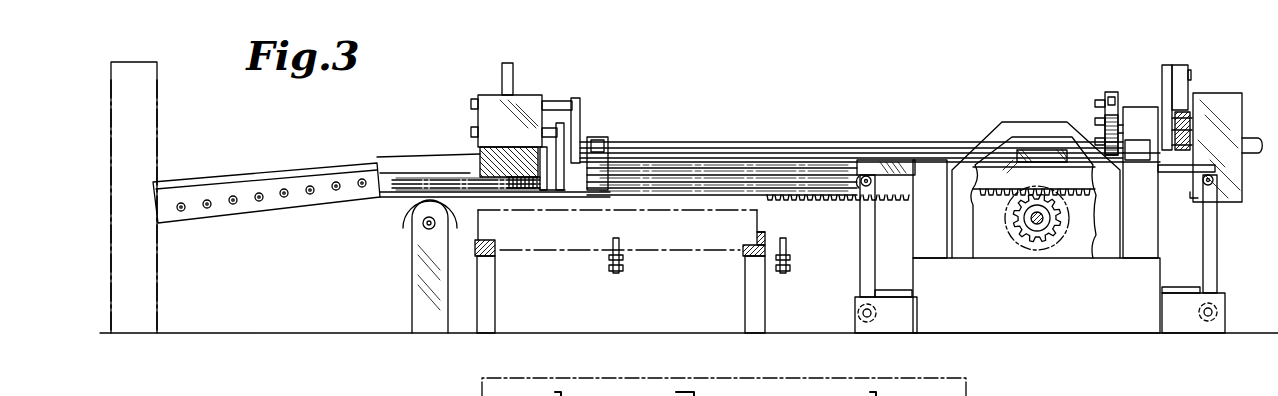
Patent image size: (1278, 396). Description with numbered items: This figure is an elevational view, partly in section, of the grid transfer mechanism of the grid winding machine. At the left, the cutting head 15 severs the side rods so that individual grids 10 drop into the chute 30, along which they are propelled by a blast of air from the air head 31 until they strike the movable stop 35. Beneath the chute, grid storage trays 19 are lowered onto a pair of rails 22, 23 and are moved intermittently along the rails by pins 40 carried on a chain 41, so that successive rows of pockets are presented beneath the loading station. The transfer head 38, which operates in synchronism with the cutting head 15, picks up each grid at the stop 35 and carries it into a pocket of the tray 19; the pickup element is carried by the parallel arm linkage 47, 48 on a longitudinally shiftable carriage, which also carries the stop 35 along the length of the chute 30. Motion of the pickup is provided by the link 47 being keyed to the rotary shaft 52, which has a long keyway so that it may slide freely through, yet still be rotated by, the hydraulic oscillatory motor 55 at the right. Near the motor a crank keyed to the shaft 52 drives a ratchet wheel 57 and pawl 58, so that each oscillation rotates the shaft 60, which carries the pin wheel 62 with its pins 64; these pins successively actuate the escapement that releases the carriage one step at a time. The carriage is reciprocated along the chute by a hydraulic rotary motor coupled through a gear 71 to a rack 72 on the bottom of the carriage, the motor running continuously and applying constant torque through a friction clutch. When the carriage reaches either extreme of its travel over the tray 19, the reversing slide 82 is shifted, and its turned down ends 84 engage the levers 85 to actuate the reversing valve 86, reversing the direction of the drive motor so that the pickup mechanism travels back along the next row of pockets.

The grids 10 is at (512, 190).
The cutting head 15 is at (158, 84).
The grid storage trays 19 is at (555, 251).
The rail 22 is at (763, 240).
The rail 23 is at (485, 258).
The chute 30 is at (433, 162).
The air head 31 is at (246, 210).
The movable stop 35 is at (542, 188).
The transfer head 38 is at (550, 82).
The pins 40 is at (613, 246).
The chain 41 is at (623, 258).
The link 47 is at (576, 114).
The link 48 is at (561, 143).
The rotary shaft 52 is at (808, 142).
The hydraulic oscillatory motor 55 is at (1212, 94).
The ratchet wheel 57 is at (1186, 152).
The pawl 58 is at (1182, 65).
The shaft 60 is at (1098, 118).
The pin wheel 62 is at (1111, 104).
The pins 64 is at (1100, 100).
The gear 71 is at (1027, 239).
The rack 72 is at (1003, 199).
The reversing slide 82 is at (1018, 160).
The turned down ends 84 is at (864, 184).
The levers 85 is at (862, 262).
The reversing valve 86 is at (1076, 311).